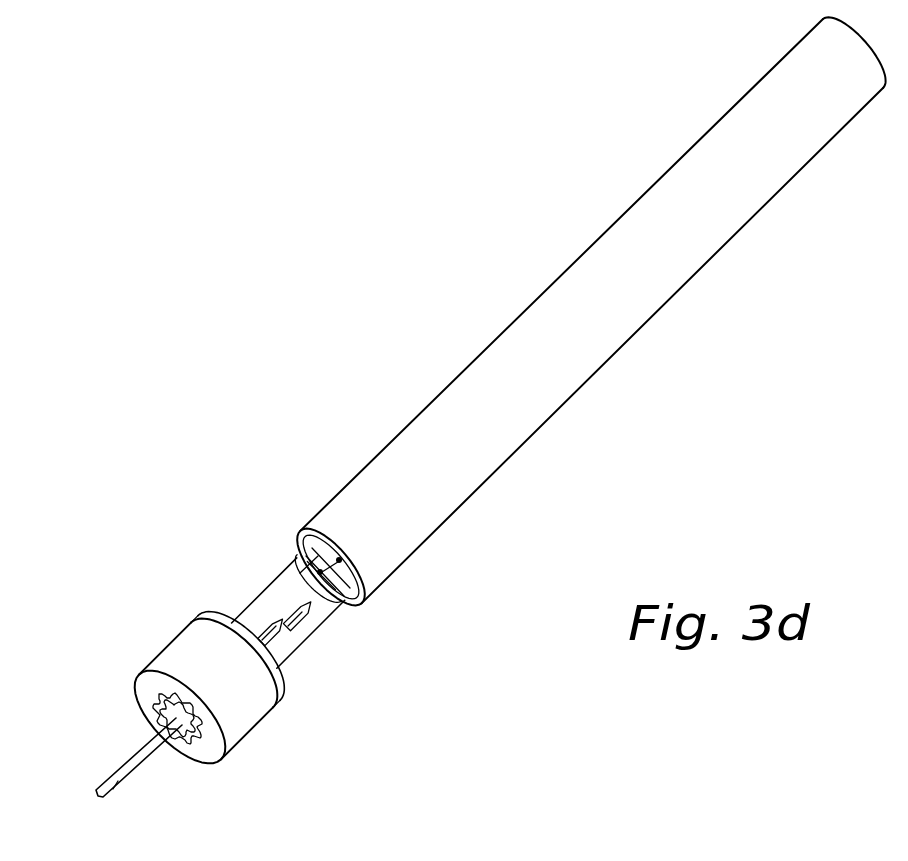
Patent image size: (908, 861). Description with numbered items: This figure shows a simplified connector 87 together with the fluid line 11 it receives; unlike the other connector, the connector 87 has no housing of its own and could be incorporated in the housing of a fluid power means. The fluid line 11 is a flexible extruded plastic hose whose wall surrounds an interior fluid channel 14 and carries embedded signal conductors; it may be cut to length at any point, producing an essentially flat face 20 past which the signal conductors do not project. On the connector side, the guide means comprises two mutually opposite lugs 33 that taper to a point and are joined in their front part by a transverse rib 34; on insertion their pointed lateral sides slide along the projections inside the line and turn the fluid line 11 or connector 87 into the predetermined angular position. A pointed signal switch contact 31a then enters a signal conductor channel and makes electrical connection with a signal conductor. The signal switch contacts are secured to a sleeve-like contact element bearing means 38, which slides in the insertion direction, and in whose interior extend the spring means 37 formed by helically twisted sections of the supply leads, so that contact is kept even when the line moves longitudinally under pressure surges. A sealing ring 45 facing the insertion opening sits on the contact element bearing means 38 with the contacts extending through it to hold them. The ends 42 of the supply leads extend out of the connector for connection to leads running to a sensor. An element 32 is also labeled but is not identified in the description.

The fluid line 11 is at (690, 299).
The fluid channel 14 is at (345, 583).
The face 20 is at (300, 528).
The signal switch contact 31a is at (278, 644).
The tube wall 32 is at (319, 653).
The lugs 33 is at (259, 604).
The transverse rib 34 is at (292, 550).
The spring means 37 is at (177, 747).
The contact element bearing means 38 is at (237, 727).
The ends of the supply leads 42 is at (102, 782).
The sealing ring 45 is at (224, 630).
The connector 87 is at (149, 630).